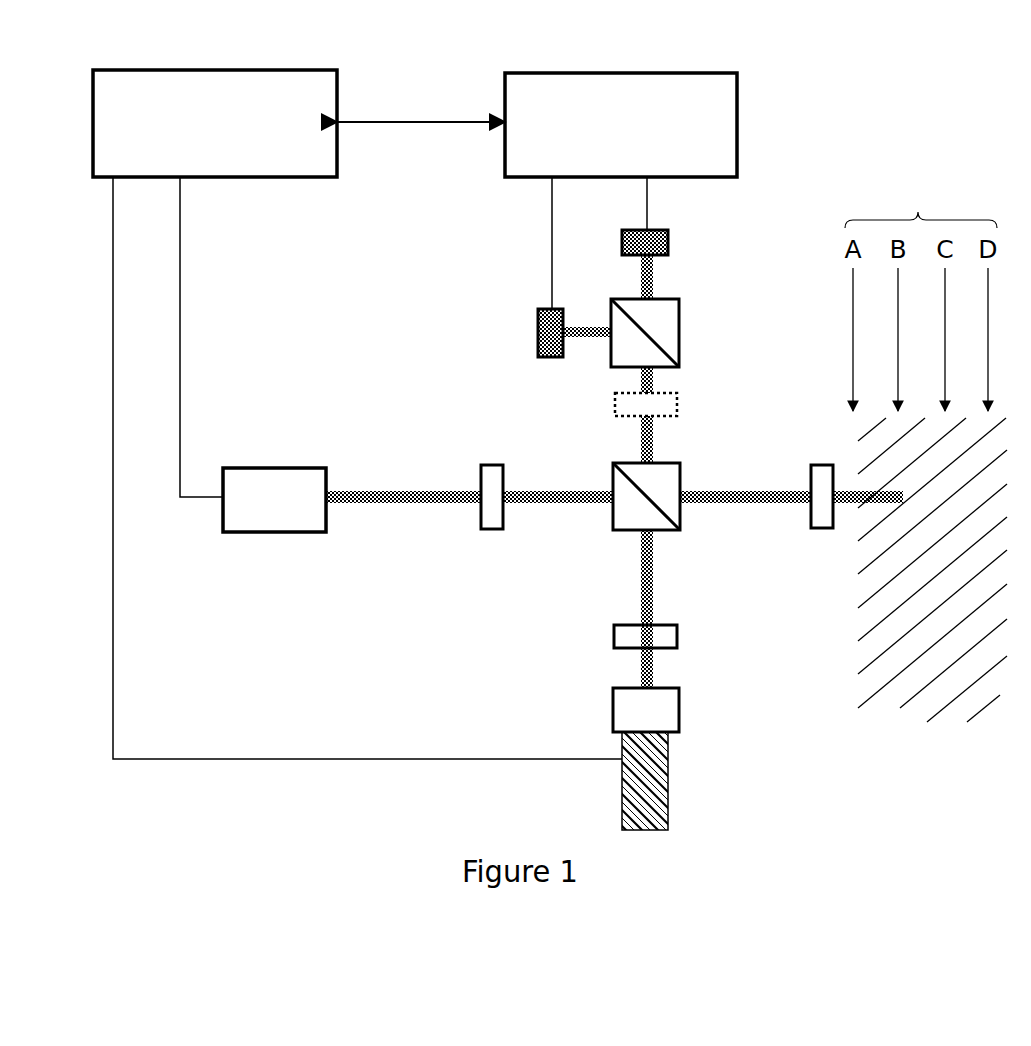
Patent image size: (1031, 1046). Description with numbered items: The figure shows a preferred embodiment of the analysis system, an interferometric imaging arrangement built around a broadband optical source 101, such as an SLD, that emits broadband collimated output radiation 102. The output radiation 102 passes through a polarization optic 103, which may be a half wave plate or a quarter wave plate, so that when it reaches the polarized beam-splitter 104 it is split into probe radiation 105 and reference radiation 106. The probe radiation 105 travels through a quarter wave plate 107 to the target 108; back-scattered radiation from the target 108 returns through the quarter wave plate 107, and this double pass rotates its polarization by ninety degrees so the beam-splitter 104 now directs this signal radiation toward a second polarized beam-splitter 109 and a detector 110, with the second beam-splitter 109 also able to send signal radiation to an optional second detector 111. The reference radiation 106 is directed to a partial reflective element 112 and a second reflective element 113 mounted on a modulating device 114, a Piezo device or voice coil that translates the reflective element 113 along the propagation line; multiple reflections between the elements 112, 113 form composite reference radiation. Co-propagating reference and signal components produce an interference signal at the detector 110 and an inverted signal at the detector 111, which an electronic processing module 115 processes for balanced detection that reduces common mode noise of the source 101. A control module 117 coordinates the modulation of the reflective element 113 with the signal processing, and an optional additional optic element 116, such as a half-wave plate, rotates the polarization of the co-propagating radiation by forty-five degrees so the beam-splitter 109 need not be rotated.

The broadband optical source 101 is at (263, 537).
The output radiation 102 is at (383, 477).
The polarization optic 103 is at (493, 455).
The polarized beam-splitter 104 is at (613, 457).
The probe radiation 105 is at (752, 510).
The reference radiation 106 is at (632, 600).
The quarter wave plate 107 is at (820, 538).
The target 108 is at (934, 733).
The second polarized beam-splitter 109 is at (684, 326).
The detector 110 is at (676, 244).
The second detector 111 is at (535, 320).
The partial reflective element 112 is at (682, 648).
The second reflective element 113 is at (618, 680).
The modulating device 114 is at (672, 772).
The electronic processing module 115 is at (743, 105).
The additional optic element 116 is at (683, 403).
The control module 117 is at (246, 183).